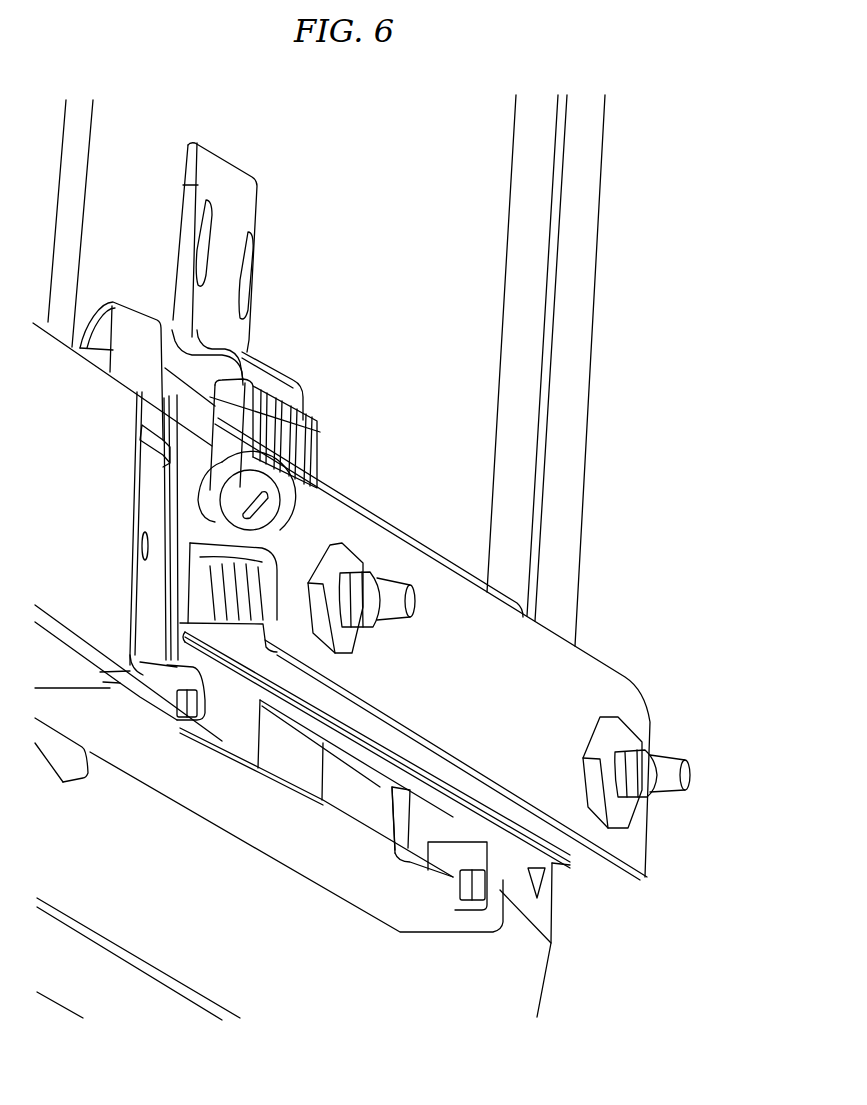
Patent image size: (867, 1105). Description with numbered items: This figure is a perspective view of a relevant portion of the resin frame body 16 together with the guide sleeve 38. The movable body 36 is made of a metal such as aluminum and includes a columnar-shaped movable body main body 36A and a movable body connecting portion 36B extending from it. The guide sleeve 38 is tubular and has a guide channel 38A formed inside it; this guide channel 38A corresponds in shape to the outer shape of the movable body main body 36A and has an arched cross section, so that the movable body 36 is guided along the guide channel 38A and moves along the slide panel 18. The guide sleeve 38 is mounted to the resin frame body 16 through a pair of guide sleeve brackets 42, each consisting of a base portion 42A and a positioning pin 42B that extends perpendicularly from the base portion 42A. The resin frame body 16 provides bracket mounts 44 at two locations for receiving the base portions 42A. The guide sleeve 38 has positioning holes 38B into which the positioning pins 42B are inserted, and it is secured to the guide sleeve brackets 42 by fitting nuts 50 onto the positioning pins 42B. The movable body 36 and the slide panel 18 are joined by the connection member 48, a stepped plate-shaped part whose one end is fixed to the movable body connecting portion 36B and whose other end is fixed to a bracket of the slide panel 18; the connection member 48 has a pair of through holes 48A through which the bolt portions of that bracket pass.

The resin frame body 16 is at (575, 485).
The slide panel 18 is at (415, 348).
The movable body 36 is at (315, 410).
The movable body main body 36A is at (260, 483).
The movable body connecting portion 36B is at (318, 432).
The guide sleeve 38 is at (577, 667).
The guide channel 38A is at (205, 500).
The positioning holes 38B is at (220, 602).
The guide sleeve brackets 42 is at (127, 563).
The base portions 42A is at (147, 627).
The positioning pins 42B is at (367, 577).
The bracket mounts 44 is at (140, 533).
The connection member 48 is at (233, 173).
The through holes 48A is at (202, 243).
The nuts 50 is at (353, 640).